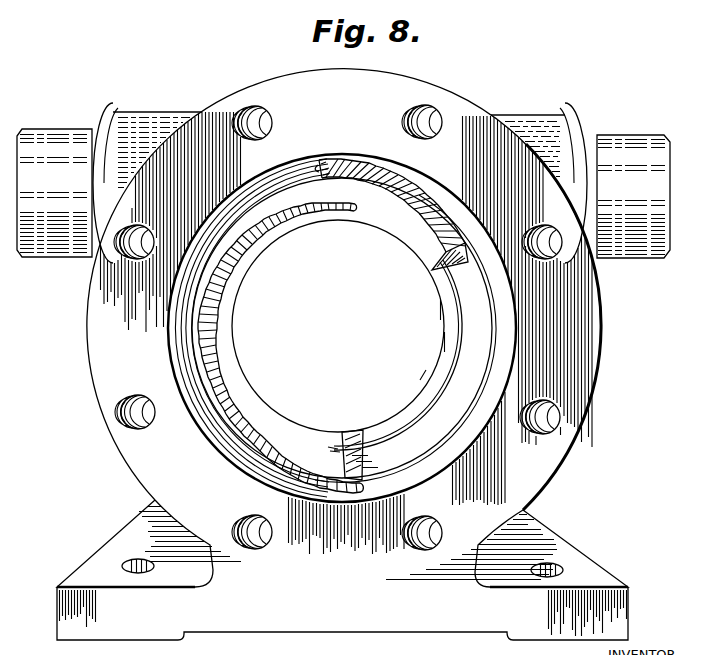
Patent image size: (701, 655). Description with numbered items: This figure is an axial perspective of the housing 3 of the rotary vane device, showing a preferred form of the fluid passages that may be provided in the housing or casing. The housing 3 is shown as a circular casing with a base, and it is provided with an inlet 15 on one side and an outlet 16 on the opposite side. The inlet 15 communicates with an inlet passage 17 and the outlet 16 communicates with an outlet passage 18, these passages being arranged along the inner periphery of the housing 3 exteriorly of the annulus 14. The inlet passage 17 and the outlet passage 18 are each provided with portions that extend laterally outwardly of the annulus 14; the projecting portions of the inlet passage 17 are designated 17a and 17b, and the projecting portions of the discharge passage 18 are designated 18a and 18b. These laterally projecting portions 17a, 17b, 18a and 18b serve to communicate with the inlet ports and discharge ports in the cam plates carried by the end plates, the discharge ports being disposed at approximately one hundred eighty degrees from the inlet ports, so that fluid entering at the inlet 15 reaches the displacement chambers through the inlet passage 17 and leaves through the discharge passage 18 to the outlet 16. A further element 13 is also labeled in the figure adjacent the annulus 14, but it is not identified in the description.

The housing 3 is at (342, 354).
The inner edge of ring seat 13 is at (421, 417).
The annulus 14 is at (398, 364).
The inlet 15 is at (616, 150).
The outlet 16 is at (57, 147).
The inlet passage 17 is at (433, 228).
The laterally projecting portion of inlet passage 17a is at (327, 170).
The laterally projecting portion of inlet passage 17b is at (335, 440).
The outlet passage 18 is at (210, 367).
The laterally projecting portion of discharge passage 18a is at (338, 488).
The laterally projecting portion of discharge passage 18b is at (350, 214).